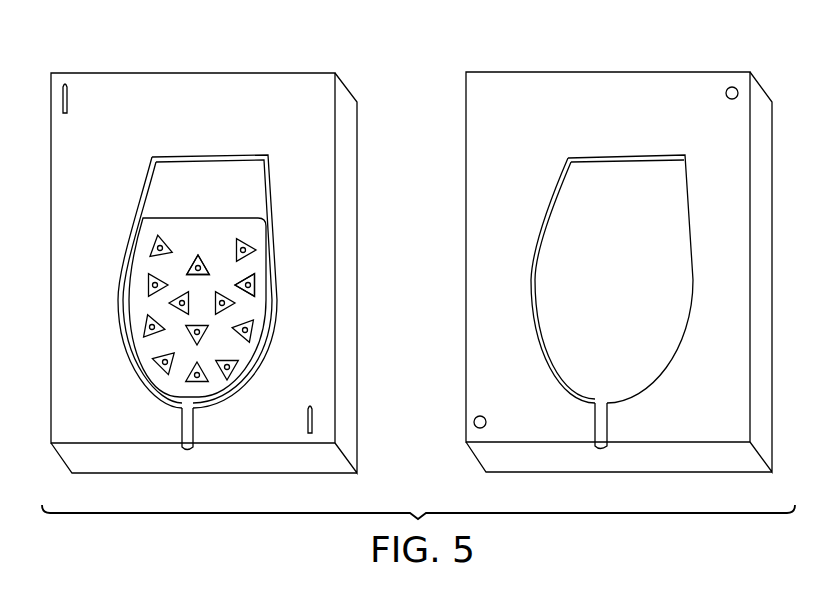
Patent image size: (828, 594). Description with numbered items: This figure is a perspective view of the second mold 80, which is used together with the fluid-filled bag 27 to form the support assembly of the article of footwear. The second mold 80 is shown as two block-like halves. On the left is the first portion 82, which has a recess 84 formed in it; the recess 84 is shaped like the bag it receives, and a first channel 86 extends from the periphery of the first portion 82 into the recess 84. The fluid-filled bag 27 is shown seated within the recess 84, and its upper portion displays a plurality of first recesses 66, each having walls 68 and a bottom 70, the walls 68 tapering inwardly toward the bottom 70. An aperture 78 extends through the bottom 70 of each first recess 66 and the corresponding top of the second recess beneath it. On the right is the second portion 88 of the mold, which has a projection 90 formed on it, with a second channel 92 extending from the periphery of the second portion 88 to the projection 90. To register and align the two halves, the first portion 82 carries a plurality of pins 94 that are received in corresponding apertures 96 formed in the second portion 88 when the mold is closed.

The second mold 80 is at (414, 72).
The first portion 82 is at (326, 211).
The recess 84 is at (150, 180).
The first channel 86 is at (182, 427).
The fluid-filled bag 27 is at (247, 225).
The first recesses 66 is at (190, 273).
The bottom 70 is at (201, 278).
The aperture 78 is at (200, 268).
The walls 68 is at (255, 282).
The pins 94 is at (69, 100).
The second portion 88 is at (472, 248).
The projection 90 is at (617, 167).
The second channel 92 is at (608, 422).
The apertures 96 is at (726, 93).